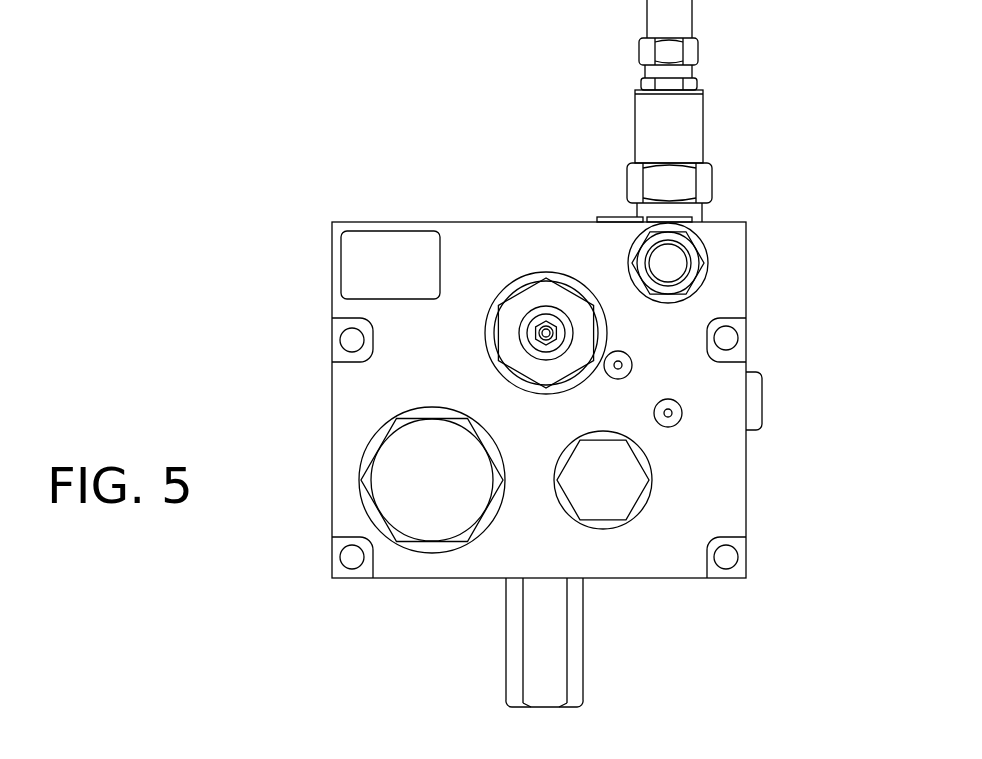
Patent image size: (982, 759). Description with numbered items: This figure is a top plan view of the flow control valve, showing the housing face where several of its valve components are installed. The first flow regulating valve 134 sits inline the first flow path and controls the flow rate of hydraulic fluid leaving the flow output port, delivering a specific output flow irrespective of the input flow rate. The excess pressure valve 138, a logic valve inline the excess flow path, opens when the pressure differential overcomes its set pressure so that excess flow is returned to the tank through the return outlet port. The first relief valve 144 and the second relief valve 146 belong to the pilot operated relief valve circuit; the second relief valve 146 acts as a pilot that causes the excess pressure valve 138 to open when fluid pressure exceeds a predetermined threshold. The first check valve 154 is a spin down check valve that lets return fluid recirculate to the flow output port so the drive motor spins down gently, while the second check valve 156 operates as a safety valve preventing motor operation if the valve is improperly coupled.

The first flow regulating valve 134 is at (523, 291).
The excess pressure valve 138 is at (577, 690).
The first relief valve 144 is at (703, 134).
The second relief valve 146 is at (703, 246).
The first check valve 154 is at (612, 527).
The second check valve 156 is at (421, 541).